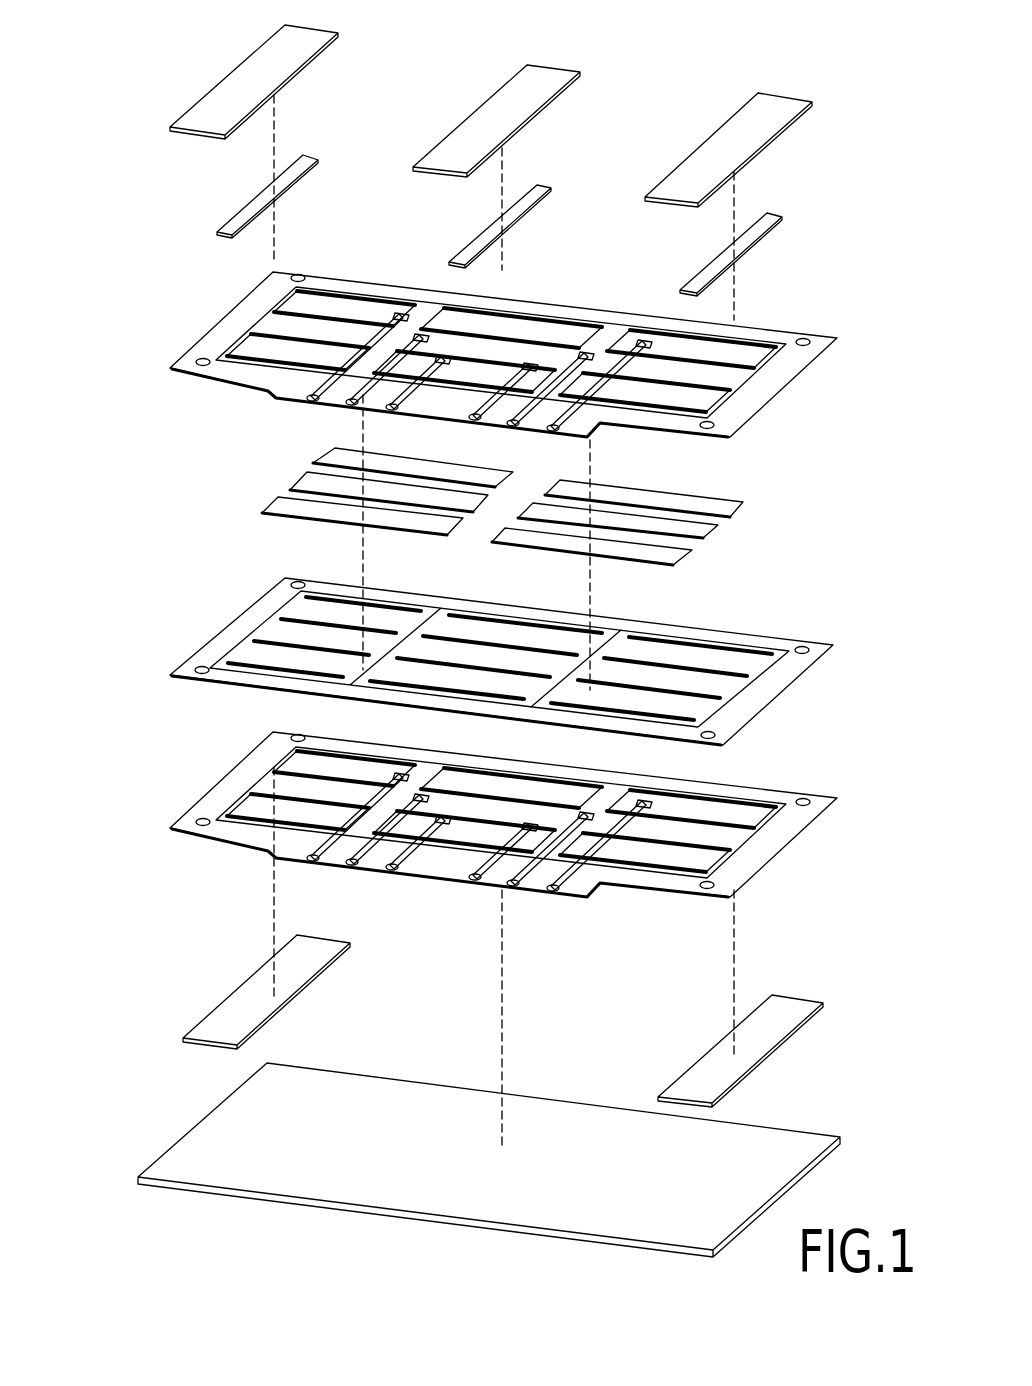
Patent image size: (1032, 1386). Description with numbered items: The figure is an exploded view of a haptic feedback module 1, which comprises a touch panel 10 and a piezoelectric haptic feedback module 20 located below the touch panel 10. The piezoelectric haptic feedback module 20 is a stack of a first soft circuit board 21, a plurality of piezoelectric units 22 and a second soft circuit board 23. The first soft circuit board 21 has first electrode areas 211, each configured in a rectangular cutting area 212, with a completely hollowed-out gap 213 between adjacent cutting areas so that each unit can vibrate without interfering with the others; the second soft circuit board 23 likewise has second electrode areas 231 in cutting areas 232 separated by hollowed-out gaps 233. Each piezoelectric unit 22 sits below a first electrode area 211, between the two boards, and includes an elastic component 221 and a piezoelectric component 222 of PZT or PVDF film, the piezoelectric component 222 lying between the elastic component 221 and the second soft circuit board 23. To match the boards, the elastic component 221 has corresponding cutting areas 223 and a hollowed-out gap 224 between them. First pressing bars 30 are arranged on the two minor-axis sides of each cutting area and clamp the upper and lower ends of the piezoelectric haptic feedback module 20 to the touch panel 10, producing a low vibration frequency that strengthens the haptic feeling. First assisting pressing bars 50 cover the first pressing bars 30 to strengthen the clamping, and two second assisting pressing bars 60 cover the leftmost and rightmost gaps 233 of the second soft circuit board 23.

The haptic feedback module 1 is at (117, 116).
The touch panel 10 is at (292, 1168).
The piezoelectric haptic feedback module 20 is at (110, 303).
The first soft circuit board 21 is at (255, 303).
The first electrode area 211 is at (330, 375).
The cutting area 212 is at (330, 325).
The gap 213 is at (640, 408).
The piezoelectric unit 22 is at (870, 532).
The elastic component 221 is at (793, 665).
The piezoelectric component 222 is at (313, 463).
The cutting area 223 is at (296, 636).
The gap 224 is at (288, 628).
The second soft circuit board 23 is at (265, 762).
The second electrode area 231 is at (265, 830).
The cutting area 232 is at (300, 812).
The gap 233 is at (297, 757).
The first pressing bar 30 is at (267, 192).
The first assisting pressing bar 50 is at (270, 58).
The second assisting pressing bar 60 is at (253, 985).